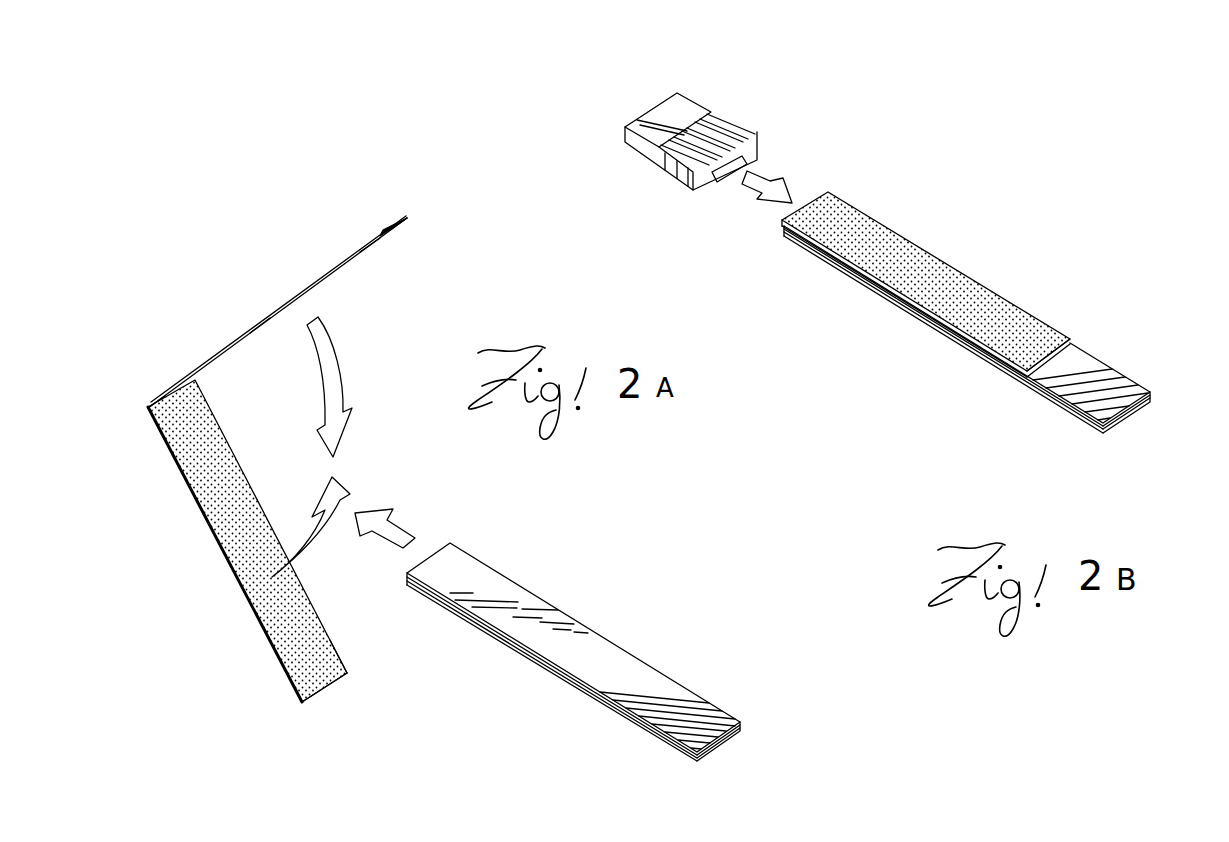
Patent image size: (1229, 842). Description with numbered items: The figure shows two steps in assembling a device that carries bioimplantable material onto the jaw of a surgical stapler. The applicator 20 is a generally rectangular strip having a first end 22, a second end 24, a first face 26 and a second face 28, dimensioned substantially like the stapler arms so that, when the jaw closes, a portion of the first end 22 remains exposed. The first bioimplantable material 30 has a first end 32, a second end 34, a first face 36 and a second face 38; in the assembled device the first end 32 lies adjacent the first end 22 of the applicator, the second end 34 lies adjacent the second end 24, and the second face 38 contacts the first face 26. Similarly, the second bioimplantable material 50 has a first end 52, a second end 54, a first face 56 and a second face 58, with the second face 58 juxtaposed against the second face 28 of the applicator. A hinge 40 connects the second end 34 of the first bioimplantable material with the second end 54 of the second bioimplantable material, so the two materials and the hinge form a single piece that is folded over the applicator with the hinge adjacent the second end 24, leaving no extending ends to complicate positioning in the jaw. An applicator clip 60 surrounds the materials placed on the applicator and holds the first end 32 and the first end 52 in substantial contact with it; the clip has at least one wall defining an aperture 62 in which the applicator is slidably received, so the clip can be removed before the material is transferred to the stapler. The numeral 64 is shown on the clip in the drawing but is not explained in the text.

In FIG. 2A, the applicator 20 is at (621, 627).
In FIG. 2A, the first end 22 is at (740, 730).
In FIG. 2B, the first end 22 is at (1132, 417).
In FIG. 2A, the second end 24 is at (438, 545).
In FIG. 2A, the first face 26 is at (645, 672).
In FIG. 2B, the first face 26 is at (1103, 373).
In FIG. 2A, the second face 28 is at (640, 730).
In FIG. 2A, the first bioimplantable material 30 is at (319, 249).
In FIG. 2A, the first end 32 is at (386, 228).
In FIG. 2B, the first end 32 is at (1070, 343).
In FIG. 2A, the second end 34 is at (152, 402).
In FIG. 2A, the first face 36 is at (258, 325).
In FIG. 2B, the first face 36 is at (925, 262).
In FIG. 2A, the second face 38 is at (377, 244).
In FIG. 2A, the hinge 40 is at (150, 412).
In FIG. 2A, the second bioimplantable material 50 is at (241, 660).
In FIG. 2A, the first end 52 is at (340, 674).
In FIG. 2A, the second end 54 is at (160, 428).
In FIG. 2A, the first face 56 is at (245, 557).
In FIG. 2A, the second face 58 is at (293, 683).
In FIG. 2B, the applicator clip 60 is at (733, 161).
In FIG. 2B, the aperture 62 is at (727, 183).
In FIG. 2B, the connector housing 64 is at (748, 140).